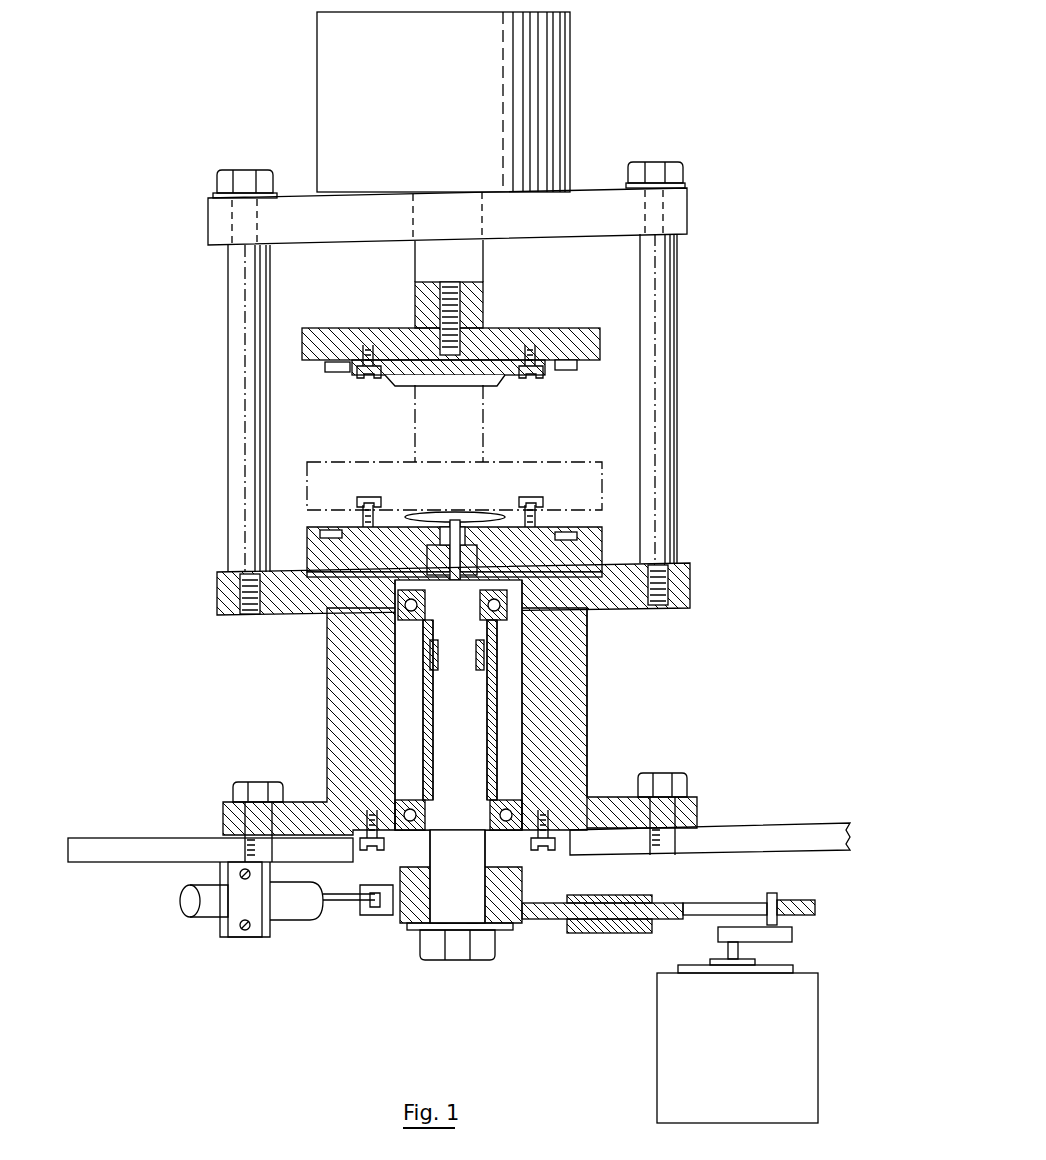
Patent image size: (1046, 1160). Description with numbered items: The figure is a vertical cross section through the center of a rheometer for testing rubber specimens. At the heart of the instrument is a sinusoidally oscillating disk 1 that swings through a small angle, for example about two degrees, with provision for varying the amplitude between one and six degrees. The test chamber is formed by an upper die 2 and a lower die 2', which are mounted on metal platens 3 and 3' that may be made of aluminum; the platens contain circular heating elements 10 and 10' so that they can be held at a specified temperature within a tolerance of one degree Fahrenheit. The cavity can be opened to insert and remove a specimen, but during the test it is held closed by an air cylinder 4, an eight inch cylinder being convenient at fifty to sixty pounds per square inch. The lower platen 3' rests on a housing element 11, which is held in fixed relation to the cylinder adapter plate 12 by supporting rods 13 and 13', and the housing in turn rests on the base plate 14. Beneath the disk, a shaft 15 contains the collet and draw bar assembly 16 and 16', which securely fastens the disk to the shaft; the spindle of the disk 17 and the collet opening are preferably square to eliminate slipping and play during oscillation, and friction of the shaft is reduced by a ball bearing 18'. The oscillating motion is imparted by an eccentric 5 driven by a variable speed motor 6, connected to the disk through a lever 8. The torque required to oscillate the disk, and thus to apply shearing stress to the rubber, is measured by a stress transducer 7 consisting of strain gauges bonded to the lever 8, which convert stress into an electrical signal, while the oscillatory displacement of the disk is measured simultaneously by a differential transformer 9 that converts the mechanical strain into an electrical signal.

The sinusoidally oscillating disk 1 is at (468, 517).
The upper die 2 is at (450, 377).
The lower die 2' is at (464, 512).
The upper metal platen 3 is at (451, 307).
The lower metal platen 3' is at (468, 550).
The air cylinder 4 is at (566, 80).
The eccentric 5 is at (790, 940).
The variable speed motor 6 is at (660, 1042).
The stress transducer 7 is at (616, 895).
The lever 8 is at (667, 903).
The differential transformer 9 is at (204, 917).
The circular heating element 10 is at (580, 380).
The circular heating element 10' is at (591, 520).
The housing element 11 is at (330, 685).
The cylinder adapter plate 12 is at (678, 215).
The supporting rod 13 is at (677, 398).
The supporting rod 13' is at (231, 408).
The base plate 14 is at (746, 834).
The shaft 15 is at (494, 720).
The collet and draw bar assembly 16 is at (467, 732).
The collet and draw bar assembly 16' is at (439, 655).
The spindle of the disk 17 is at (432, 555).
The ball bearing 18' is at (462, 710).